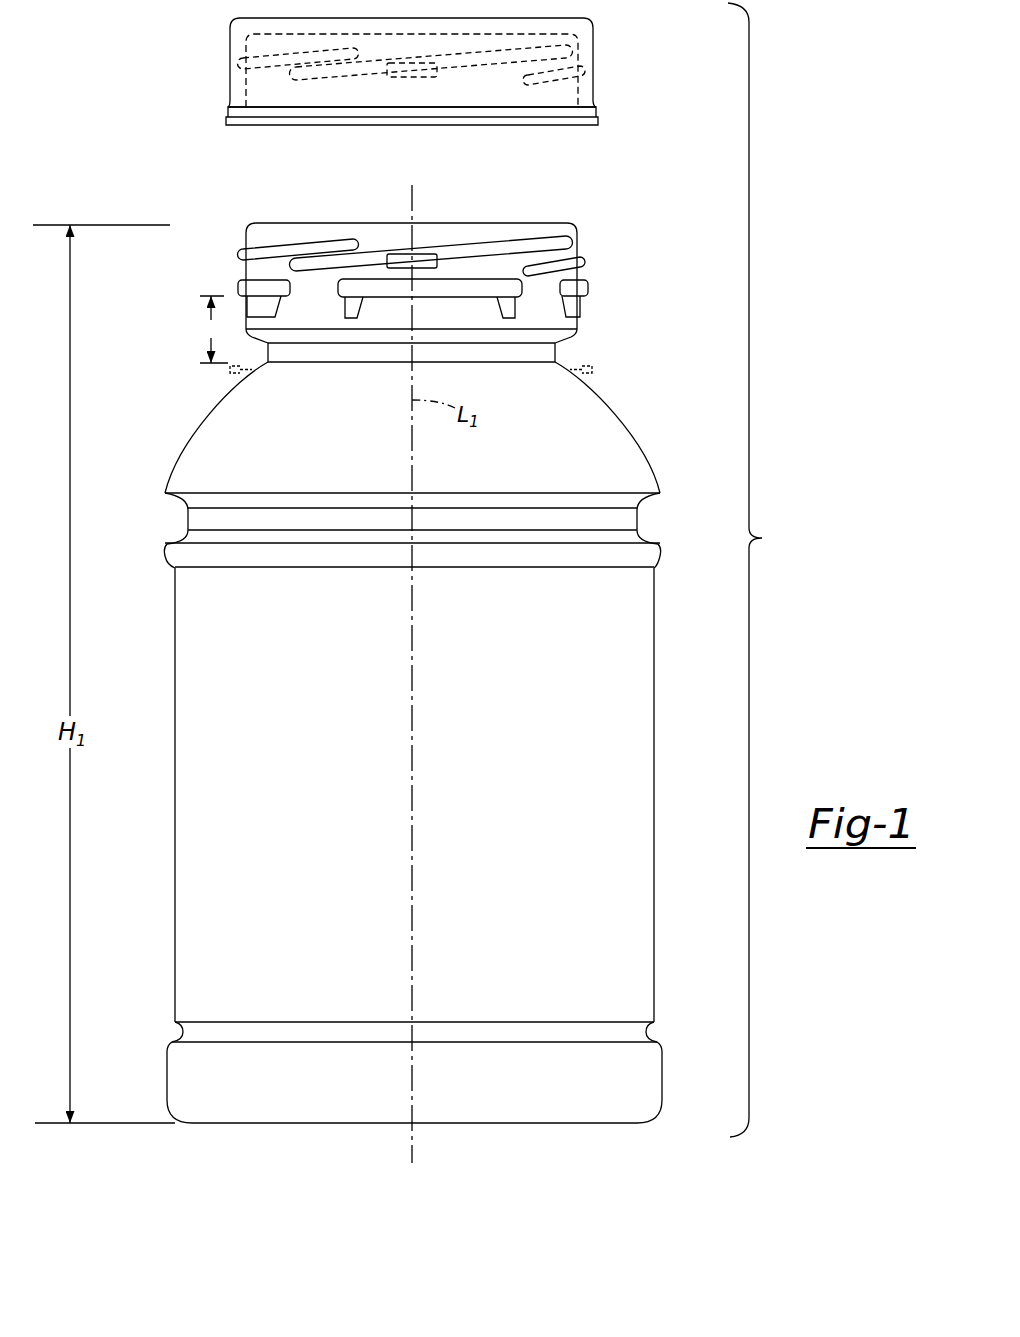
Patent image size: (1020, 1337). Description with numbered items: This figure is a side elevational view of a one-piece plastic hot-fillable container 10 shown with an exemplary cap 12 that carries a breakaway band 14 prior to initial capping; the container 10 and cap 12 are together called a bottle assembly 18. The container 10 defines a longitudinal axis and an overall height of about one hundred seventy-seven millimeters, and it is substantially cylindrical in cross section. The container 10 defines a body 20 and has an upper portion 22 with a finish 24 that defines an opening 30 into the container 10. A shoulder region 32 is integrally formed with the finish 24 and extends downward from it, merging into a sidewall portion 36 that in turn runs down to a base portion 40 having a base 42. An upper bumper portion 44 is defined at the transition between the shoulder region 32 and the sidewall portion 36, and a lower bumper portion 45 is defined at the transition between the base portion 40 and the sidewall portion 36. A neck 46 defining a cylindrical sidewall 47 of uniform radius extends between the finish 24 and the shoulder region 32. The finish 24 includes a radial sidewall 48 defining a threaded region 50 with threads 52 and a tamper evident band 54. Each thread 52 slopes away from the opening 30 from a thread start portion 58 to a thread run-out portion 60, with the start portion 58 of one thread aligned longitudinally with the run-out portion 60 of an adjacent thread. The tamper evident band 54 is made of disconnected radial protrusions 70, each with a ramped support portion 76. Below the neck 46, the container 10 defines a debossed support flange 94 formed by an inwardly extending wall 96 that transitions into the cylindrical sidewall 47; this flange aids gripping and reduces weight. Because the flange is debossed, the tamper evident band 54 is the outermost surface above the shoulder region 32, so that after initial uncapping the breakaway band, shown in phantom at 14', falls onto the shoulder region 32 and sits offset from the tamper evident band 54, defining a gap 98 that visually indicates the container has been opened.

The container 10 is at (186, 215).
The cap 12 is at (243, 76).
The breakaway band 14 is at (378, 124).
The breakaway band (broken away, in phantom) 14' is at (461, 391).
The bottle assembly 18 is at (765, 570).
The body 20 is at (182, 730).
The upper portion 22 is at (196, 365).
The finish 24 is at (218, 278).
The opening 30 is at (493, 222).
The shoulder region 32 is at (190, 415).
The sidewall portion 36 is at (373, 780).
The base portion 40 is at (369, 1118).
The base 42 is at (300, 1124).
The upper bumper portion 44 is at (167, 552).
The lower bumper portion 45 is at (167, 1063).
The neck 46 is at (560, 350).
The cylindrical sidewall 47 is at (325, 356).
The radial sidewall 48 is at (378, 252).
The threaded region 50 is at (446, 216).
The threads 52 is at (275, 248).
The tamper evident (TE) band 54 is at (592, 287).
The thread start portion 58 is at (332, 240).
The thread run-out portion 60 is at (308, 268).
The radial protrusions 70 is at (470, 290).
The ramped support portion 76 is at (372, 312).
The debossed support flange 94 is at (250, 340).
The inwardly extending wall 96 is at (455, 352).
The gap 98 is at (210, 325).